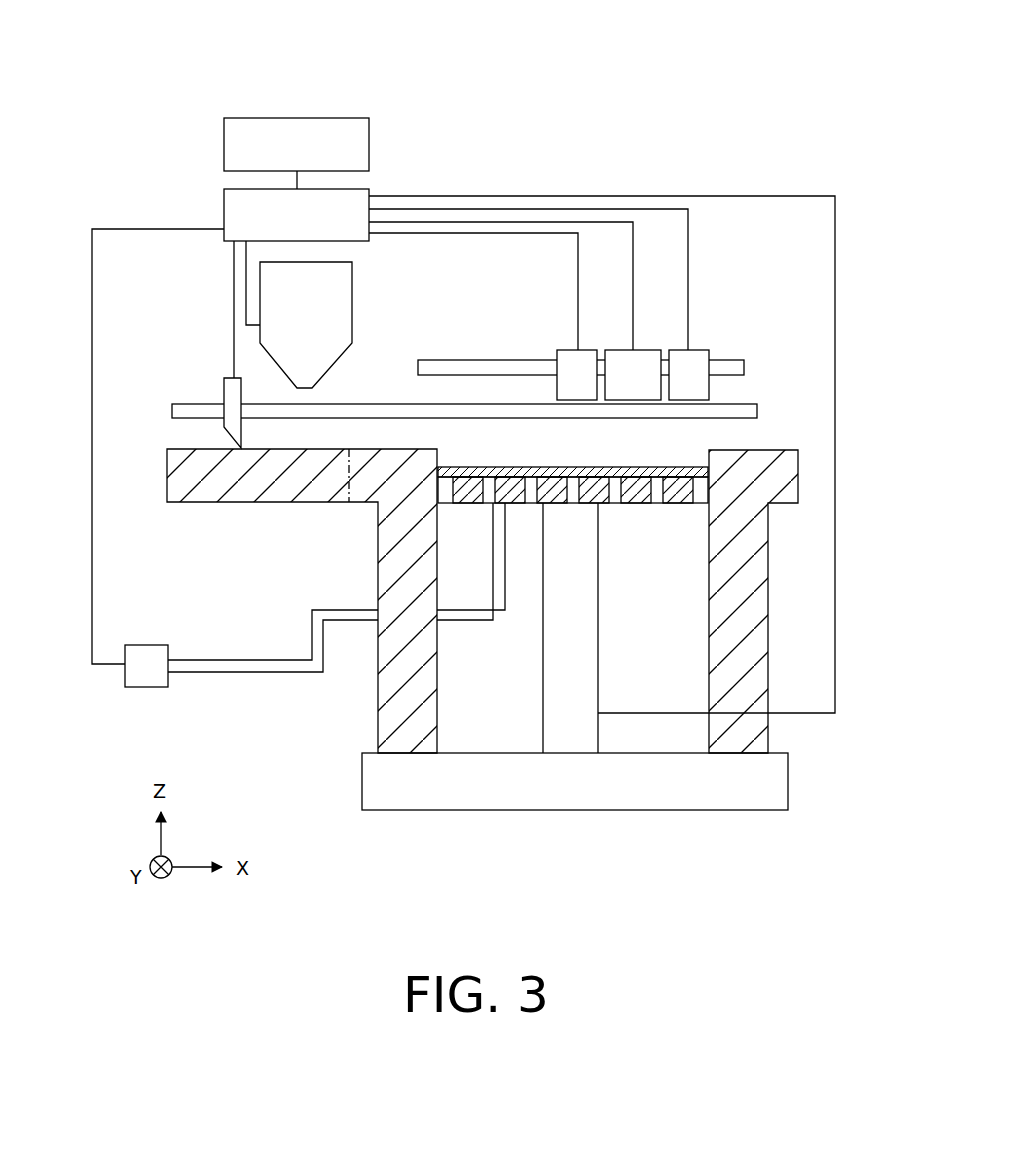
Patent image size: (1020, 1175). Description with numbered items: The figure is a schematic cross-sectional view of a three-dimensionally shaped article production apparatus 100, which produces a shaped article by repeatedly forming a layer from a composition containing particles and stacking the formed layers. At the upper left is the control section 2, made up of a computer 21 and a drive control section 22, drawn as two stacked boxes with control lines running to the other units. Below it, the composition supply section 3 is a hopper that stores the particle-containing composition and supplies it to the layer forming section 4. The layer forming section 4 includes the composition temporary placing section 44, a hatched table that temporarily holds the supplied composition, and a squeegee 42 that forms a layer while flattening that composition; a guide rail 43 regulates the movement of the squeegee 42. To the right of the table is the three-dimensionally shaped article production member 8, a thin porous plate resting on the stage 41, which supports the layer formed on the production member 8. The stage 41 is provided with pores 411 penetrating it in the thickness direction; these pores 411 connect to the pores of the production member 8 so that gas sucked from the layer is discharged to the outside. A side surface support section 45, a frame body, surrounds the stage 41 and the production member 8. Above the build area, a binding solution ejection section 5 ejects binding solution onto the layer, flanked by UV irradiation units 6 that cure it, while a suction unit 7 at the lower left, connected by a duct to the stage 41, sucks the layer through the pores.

The three-dimensionally shaped article production apparatus 100 is at (606, 68).
The control section 2 is at (203, 156).
The computer 21 is at (252, 118).
The drive control section 22 is at (224, 212).
The composition supply section 3 is at (345, 256).
The guide rail 43 is at (195, 412).
The squeegee 42 is at (232, 440).
The composition temporary placing section 44 is at (285, 450).
The three-dimensionally shaped article production member 8 is at (617, 467).
The stage 41 is at (475, 495).
The pores 411 is at (615, 496).
The side surface support section 45 is at (740, 450).
The layer forming section 4 is at (790, 580).
The binding solution ejection section 5 is at (640, 350).
The UV irradiation unit 6 is at (568, 350).
The suction unit 7 is at (145, 688).